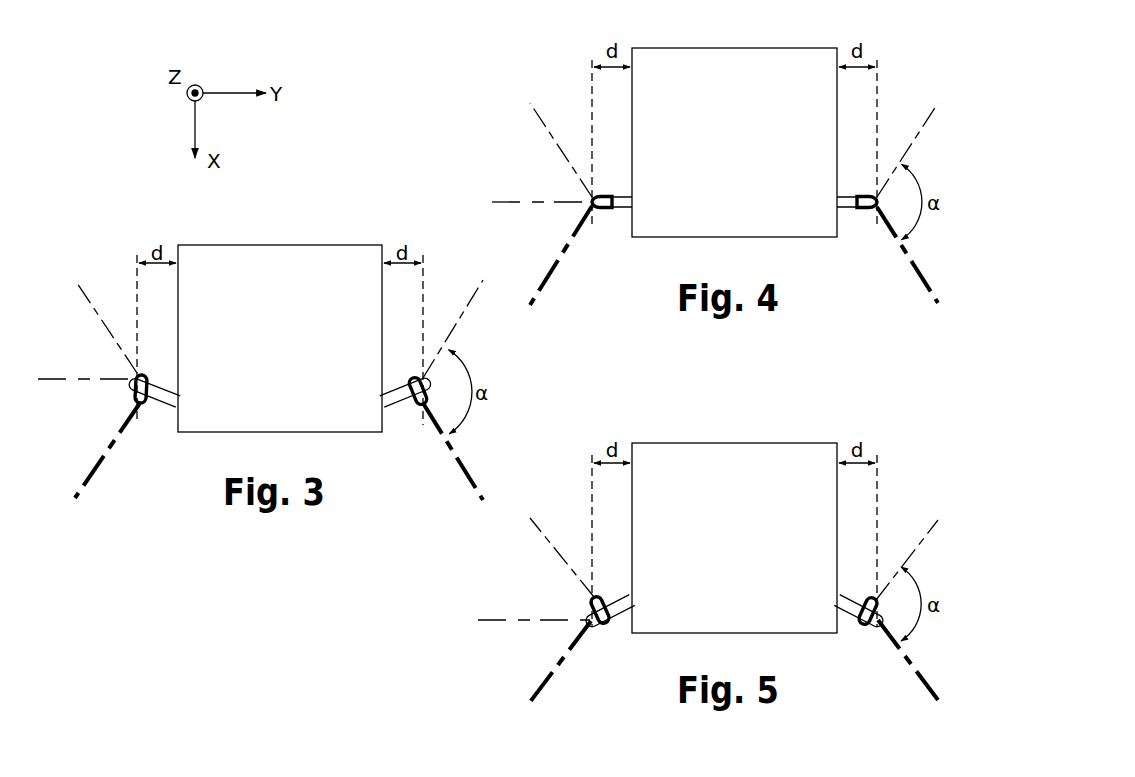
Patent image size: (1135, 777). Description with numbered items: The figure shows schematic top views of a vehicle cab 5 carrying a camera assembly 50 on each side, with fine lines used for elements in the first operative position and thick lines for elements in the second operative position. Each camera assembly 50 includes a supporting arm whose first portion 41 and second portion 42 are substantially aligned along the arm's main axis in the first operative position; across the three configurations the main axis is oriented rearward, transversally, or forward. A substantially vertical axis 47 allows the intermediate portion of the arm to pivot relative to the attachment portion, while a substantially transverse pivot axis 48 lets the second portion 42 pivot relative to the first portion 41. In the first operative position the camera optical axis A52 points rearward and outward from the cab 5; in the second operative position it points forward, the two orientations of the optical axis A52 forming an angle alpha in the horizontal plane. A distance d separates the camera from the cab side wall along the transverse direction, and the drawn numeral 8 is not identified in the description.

In FIG. 3, the vehicle body 5 is at (271, 352).
In FIG. 4, the vehicle body 5 is at (726, 157).
In FIG. 5, the vehicle body 5 is at (726, 552).
In FIG. 5, the vehicle 8 is at (355, 776).
In FIG. 3, the support arm 41 is at (392, 388).
In FIG. 4, the support arm 41 is at (845, 197).
In FIG. 5, the support arm 41 is at (847, 598).
In FIG. 3, the actuator knob 42 is at (139, 375).
In FIG. 4, the actuator knob 42 is at (602, 197).
In FIG. 5, the actuator knob 42 is at (603, 595).
In FIG. 3, the shaft 47 is at (165, 408).
In FIG. 4, the shaft 47 is at (628, 208).
In FIG. 5, the shaft 47 is at (621, 618).
In FIG. 3, the reference plane 48 is at (85, 378).
In FIG. 4, the reference plane 48 is at (515, 202).
In FIG. 5, the reference plane 48 is at (497, 622).
In FIG. 3, the pivot 50 is at (402, 413).
In FIG. 4, the pivot 50 is at (853, 222).
In FIG. 5, the pivot 50 is at (848, 623).
In FIG. 3, the pivot axis A52 is at (467, 303).
In FIG. 4, the pivot axis A52 is at (923, 120).
In FIG. 5, the pivot axis A52 is at (932, 528).